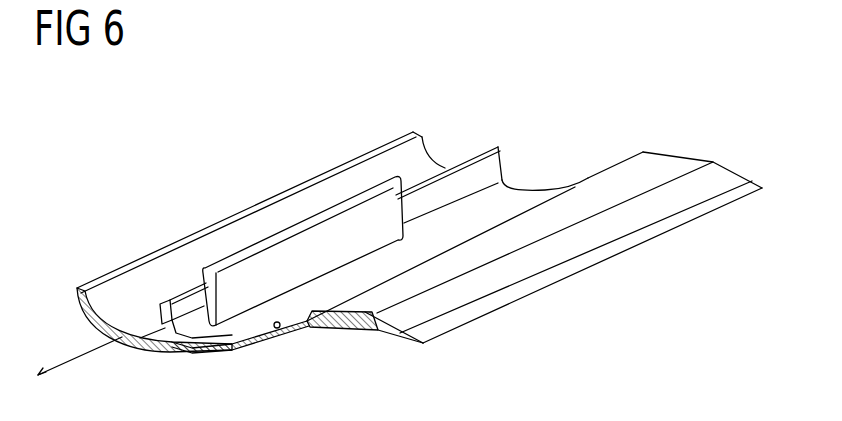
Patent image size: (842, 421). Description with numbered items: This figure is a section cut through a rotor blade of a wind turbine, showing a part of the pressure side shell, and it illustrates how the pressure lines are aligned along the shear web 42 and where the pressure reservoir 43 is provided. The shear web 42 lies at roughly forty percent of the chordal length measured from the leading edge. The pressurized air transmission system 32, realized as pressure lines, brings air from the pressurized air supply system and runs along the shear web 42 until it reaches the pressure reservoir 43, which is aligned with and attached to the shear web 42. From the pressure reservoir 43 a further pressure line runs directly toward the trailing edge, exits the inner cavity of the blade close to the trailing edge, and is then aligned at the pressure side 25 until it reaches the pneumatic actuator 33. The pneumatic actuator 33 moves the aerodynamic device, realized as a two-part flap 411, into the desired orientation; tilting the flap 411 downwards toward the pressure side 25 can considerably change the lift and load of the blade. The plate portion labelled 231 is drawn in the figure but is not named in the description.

The pressure side 25 is at (193, 353).
The pressurized air transmission system 32 is at (67, 363).
The pneumatic actuator 33 is at (364, 333).
The shear web 42 is at (186, 299).
The pressure reservoir 43 is at (320, 233).
The plate section 231 is at (663, 235).
The flap 411 is at (752, 182).